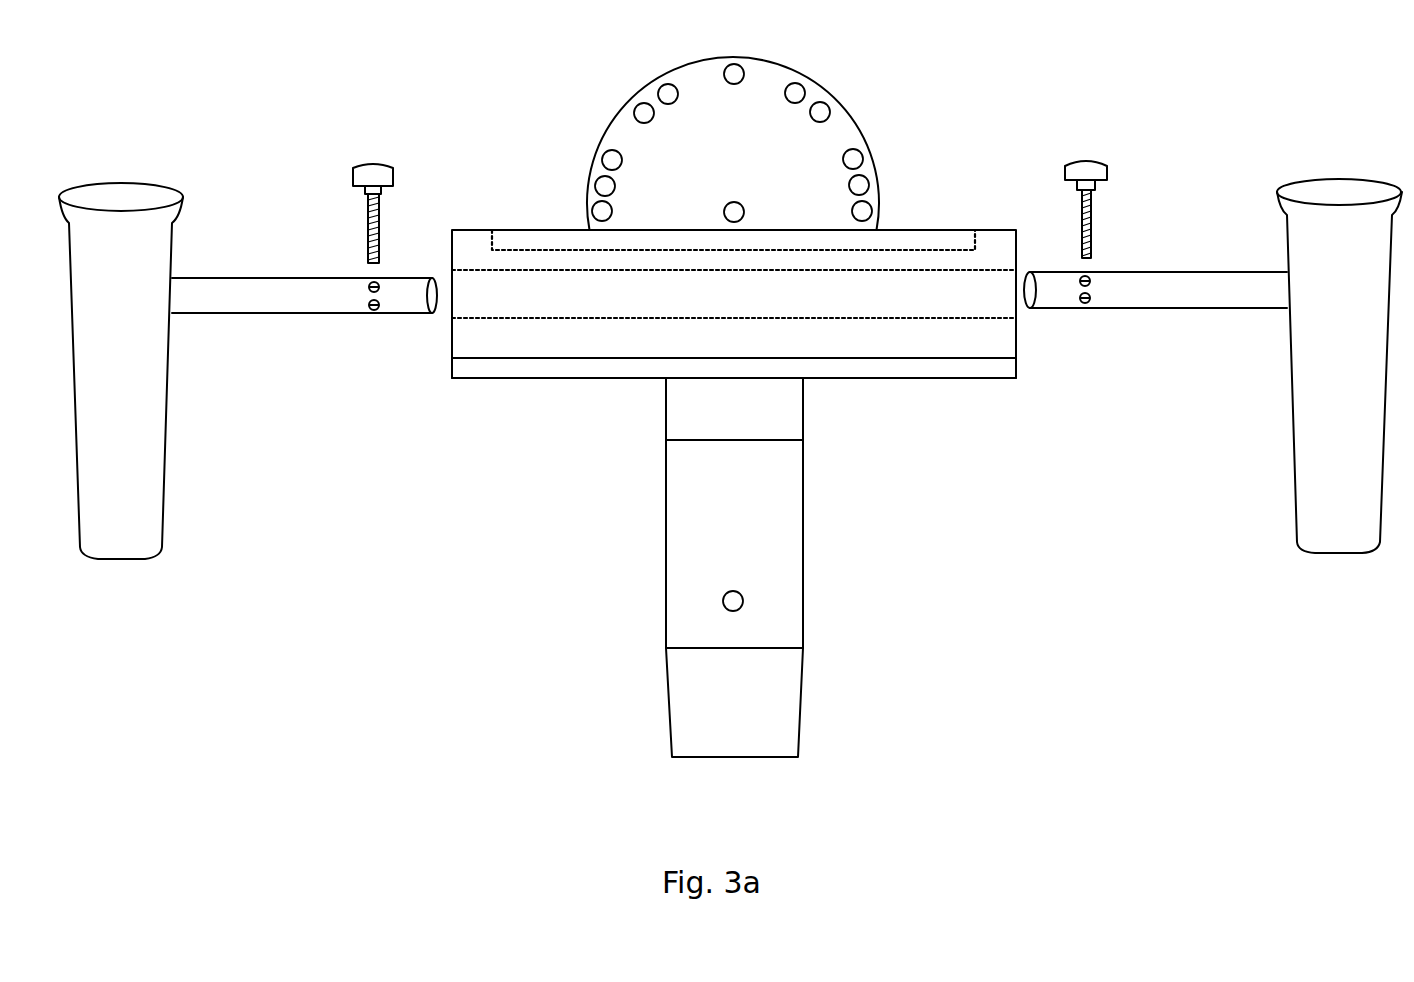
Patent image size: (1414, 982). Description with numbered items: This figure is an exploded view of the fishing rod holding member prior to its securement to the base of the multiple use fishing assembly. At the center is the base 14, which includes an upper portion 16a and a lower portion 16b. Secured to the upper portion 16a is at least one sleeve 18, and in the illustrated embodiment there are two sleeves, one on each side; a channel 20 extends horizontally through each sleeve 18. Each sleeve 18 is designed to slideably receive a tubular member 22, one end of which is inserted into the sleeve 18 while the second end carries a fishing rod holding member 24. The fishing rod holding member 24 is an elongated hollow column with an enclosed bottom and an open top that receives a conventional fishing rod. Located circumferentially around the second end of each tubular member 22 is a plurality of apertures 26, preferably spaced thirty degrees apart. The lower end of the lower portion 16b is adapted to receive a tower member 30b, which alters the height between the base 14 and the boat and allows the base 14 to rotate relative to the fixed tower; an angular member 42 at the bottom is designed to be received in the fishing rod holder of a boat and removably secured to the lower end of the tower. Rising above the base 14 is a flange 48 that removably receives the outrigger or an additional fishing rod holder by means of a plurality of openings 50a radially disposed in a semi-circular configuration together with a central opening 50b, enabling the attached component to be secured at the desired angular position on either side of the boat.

The base 14 is at (873, 372).
The upper portion 16a is at (707, 298).
The lower portion 16b is at (761, 567).
The sleeve 18 is at (463, 285).
The channel 20 is at (928, 236).
The tubular member 22 is at (1155, 283).
The fishing rod holding member 24 is at (1293, 418).
The apertures 26 is at (1087, 303).
The tower member 30b is at (682, 579).
The angular member 42 is at (782, 702).
The flange 48 is at (840, 125).
The openings 50a is at (725, 67).
The central opening 50b is at (727, 203).